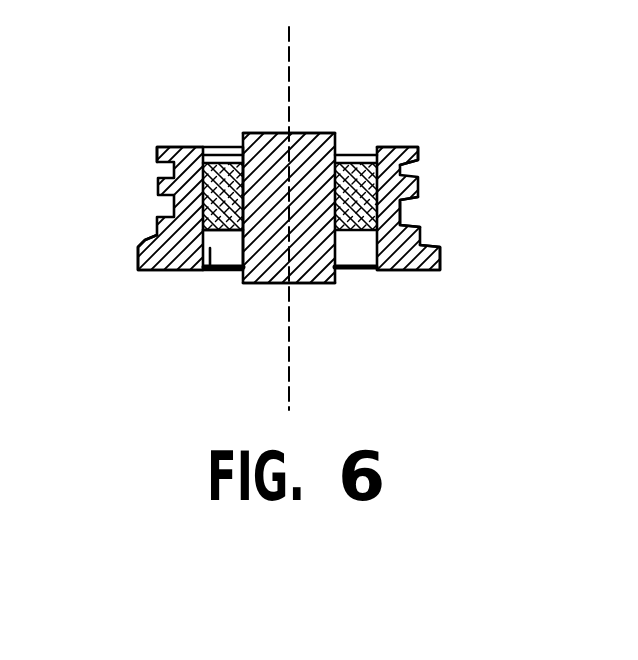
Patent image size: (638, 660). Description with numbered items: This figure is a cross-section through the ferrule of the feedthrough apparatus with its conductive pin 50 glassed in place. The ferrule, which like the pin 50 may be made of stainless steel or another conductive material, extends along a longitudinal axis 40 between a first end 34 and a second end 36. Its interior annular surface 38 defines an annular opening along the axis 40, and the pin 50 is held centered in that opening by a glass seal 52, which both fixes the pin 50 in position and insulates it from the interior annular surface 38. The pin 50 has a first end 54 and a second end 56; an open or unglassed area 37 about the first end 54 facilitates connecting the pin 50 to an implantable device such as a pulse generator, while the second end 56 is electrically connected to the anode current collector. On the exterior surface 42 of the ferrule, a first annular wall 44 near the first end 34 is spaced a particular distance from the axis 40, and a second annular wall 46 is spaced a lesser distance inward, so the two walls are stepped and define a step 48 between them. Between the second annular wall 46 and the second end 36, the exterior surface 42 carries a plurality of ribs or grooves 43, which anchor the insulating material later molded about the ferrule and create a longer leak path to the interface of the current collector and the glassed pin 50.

The first end of ferrule 34 is at (147, 272).
The second end of ferrule 36 is at (391, 147).
The open or unglassed area 37 is at (209, 270).
The interior annular surface 38 is at (372, 248).
The longitudinal axis 40 is at (292, 42).
The exterior surface 42 is at (157, 157).
The rib or groove 43 is at (420, 172).
The first annular wall 44 is at (443, 255).
The second annular wall 46 is at (420, 228).
The step 48 is at (150, 245).
The pin 50 is at (313, 285).
The glass seal 52 is at (218, 147).
The first end of pin 54 is at (268, 285).
The second end of pin 56 is at (266, 133).